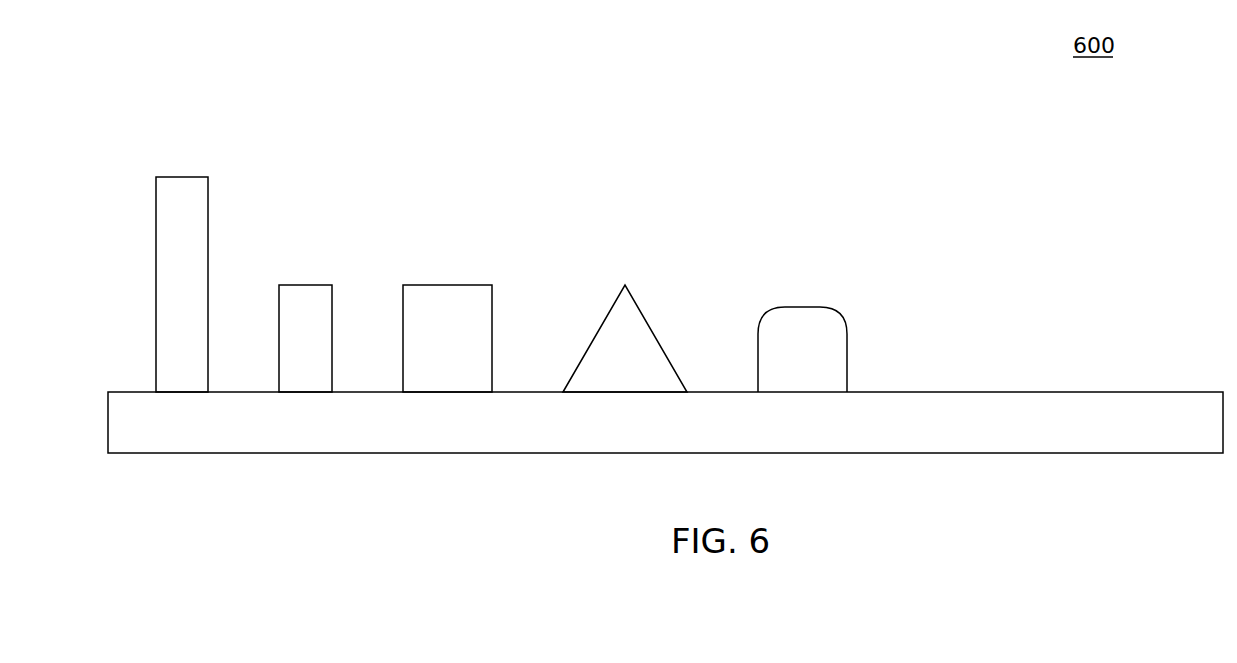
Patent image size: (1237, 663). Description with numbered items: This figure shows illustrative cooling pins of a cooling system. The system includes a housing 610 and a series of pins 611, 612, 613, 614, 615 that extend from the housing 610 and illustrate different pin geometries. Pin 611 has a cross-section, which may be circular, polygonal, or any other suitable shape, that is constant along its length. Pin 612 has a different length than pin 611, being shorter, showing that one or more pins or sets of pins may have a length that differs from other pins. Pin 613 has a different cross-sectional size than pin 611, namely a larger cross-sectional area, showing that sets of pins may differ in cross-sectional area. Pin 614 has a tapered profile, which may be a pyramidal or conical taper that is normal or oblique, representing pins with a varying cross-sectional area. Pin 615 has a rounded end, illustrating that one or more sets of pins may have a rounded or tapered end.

The housing 610 is at (1095, 392).
The pin 611 is at (187, 177).
The pin 612 is at (310, 285).
The pin 613 is at (461, 285).
The pin 614 is at (625, 285).
The pin 615 is at (777, 307).